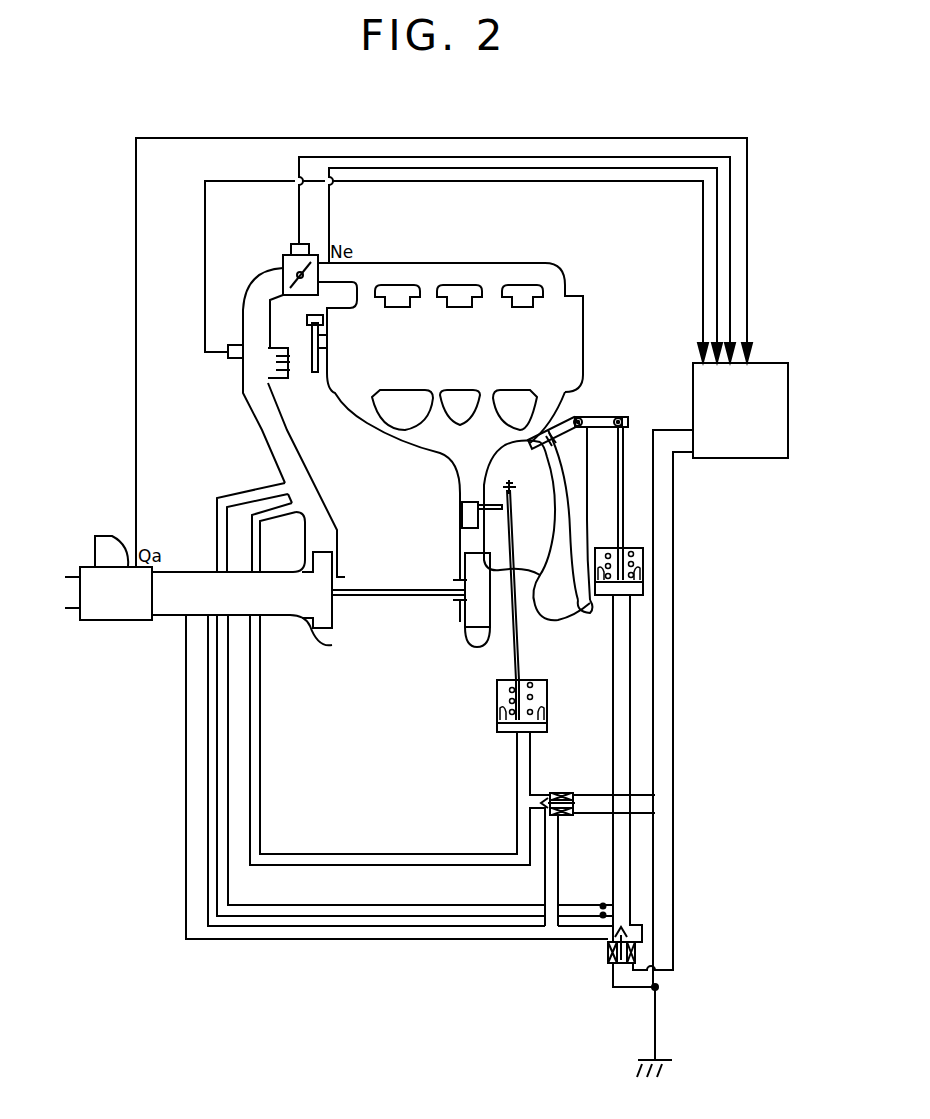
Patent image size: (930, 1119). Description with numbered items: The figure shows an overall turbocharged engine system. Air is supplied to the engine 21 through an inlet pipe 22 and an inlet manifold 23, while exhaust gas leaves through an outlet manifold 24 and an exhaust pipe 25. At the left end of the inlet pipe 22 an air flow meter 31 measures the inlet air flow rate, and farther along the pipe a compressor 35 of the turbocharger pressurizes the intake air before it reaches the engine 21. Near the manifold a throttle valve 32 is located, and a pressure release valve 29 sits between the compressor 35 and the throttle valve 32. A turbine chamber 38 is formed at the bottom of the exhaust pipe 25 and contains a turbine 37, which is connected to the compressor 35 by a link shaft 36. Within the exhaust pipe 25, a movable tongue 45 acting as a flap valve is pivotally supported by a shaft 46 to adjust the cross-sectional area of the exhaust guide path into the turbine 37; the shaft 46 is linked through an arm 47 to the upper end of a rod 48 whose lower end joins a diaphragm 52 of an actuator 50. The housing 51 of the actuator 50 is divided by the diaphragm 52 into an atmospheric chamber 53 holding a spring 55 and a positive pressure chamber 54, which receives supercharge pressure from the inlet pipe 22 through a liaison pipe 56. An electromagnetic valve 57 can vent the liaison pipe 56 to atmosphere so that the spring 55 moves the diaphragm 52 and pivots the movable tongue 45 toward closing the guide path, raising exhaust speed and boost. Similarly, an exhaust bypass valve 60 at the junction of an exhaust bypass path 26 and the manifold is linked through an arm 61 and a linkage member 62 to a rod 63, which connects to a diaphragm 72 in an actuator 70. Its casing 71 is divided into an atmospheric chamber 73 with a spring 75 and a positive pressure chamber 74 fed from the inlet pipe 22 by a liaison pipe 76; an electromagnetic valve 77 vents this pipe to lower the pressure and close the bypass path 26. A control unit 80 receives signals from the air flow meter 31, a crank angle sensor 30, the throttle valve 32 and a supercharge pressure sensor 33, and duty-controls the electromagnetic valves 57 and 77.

The engine 21 is at (573, 326).
The inlet pipe 22 is at (272, 455).
The inlet manifold 23 is at (402, 283).
The outlet manifold 24 is at (388, 436).
The exhaust pipe 25 is at (460, 548).
The exhaust bypass path 26 is at (571, 513).
The pressure release valve 29 is at (290, 378).
The crank angle sensor 30 is at (304, 328).
The air flow meter 31 is at (132, 620).
The throttle valve 32 is at (284, 270).
The supercharge pressure sensor 33 is at (232, 360).
The compressor 35 is at (312, 618).
The link shaft 36 is at (376, 590).
The turbine 37 is at (465, 606).
The turbine chamber 38 is at (466, 640).
The movable tongue 45 is at (461, 512).
The shaft 46 is at (486, 505).
The arm 47 is at (513, 493).
The rod 48 is at (514, 548).
The actuator 50 is at (500, 745).
The housing 51 is at (497, 688).
The diaphragm 52 is at (497, 720).
The atmospheric chamber 53 is at (540, 690).
The positive pressure chamber 54 is at (540, 726).
The spring 55 is at (525, 680).
The liaison pipe 56 is at (517, 800).
The electromagnetic valve 57 is at (568, 793).
The exhaust bypass valve 60 is at (543, 437).
The arm 61 is at (580, 417).
The linkage member 62 is at (598, 429).
The rod 63 is at (625, 428).
The actuator 70 is at (625, 540).
The casing 71 is at (580, 600).
The diaphragm 72 is at (643, 590).
The atmospheric chamber 73 is at (645, 557).
The positive pressure chamber 74 is at (636, 600).
The spring 75 is at (604, 556).
The liaison pipe 76 is at (656, 697).
The electromagnetic valve 77 is at (608, 955).
The control unit 80 is at (757, 363).